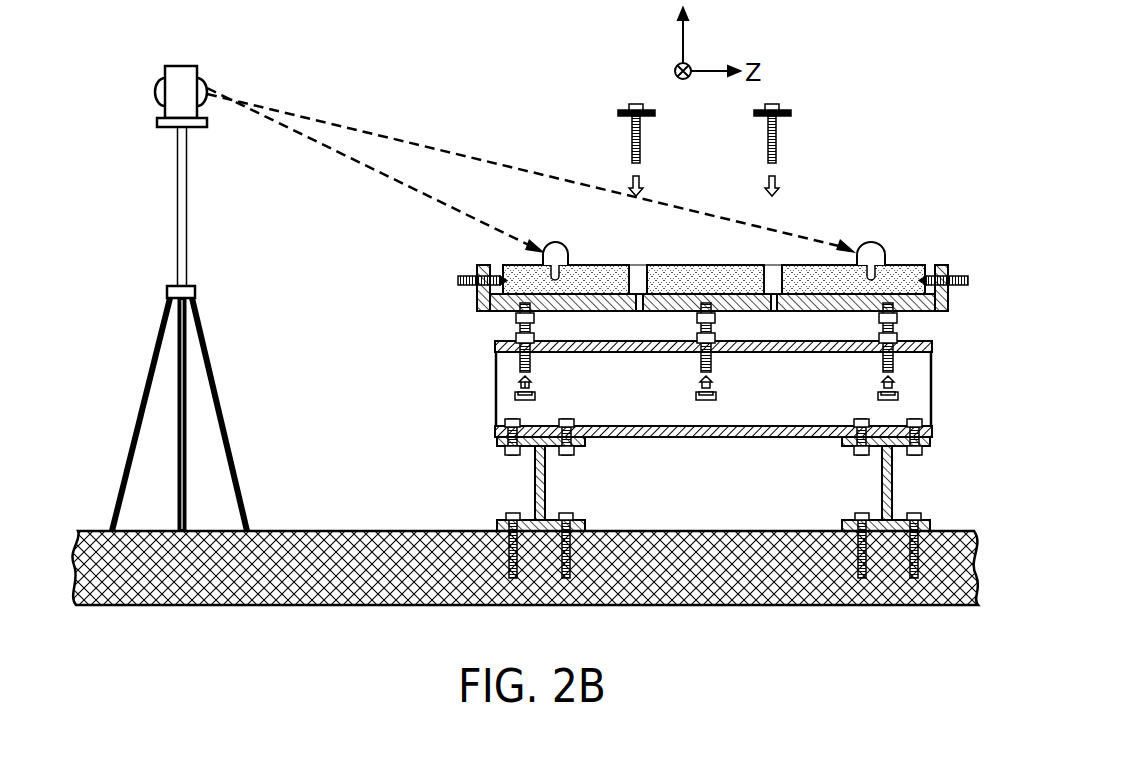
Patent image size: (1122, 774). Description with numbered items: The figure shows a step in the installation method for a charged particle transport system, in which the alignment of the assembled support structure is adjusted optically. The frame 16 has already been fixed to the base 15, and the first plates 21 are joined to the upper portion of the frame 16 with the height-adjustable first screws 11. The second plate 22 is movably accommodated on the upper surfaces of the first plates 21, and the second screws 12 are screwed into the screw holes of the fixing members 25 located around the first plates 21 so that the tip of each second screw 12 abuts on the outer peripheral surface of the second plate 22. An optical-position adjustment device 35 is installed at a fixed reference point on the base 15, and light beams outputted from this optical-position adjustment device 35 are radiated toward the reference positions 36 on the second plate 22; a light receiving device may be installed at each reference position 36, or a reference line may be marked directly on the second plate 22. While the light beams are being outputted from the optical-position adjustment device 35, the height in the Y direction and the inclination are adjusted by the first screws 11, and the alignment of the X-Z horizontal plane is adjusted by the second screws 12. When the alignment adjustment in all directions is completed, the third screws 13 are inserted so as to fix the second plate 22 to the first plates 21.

The first screws 11 is at (533, 362).
The second screws 12 is at (463, 276).
The third screws 13 is at (630, 142).
The base 15 is at (340, 530).
The frame 16 is at (495, 397).
The first plates 21 is at (602, 301).
The second plate 22 is at (716, 282).
The fixing members 25 is at (478, 298).
The optical-position adjustment device 35 is at (183, 64).
The reference positions 36 is at (556, 241).